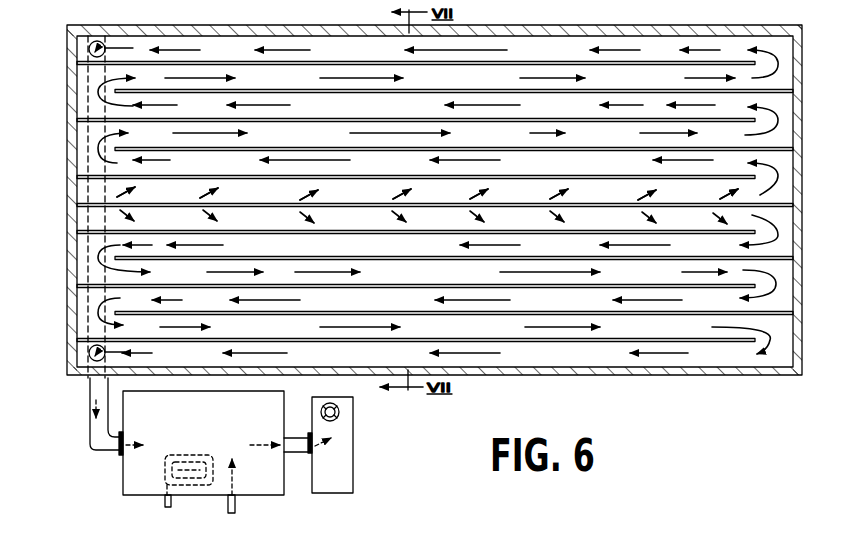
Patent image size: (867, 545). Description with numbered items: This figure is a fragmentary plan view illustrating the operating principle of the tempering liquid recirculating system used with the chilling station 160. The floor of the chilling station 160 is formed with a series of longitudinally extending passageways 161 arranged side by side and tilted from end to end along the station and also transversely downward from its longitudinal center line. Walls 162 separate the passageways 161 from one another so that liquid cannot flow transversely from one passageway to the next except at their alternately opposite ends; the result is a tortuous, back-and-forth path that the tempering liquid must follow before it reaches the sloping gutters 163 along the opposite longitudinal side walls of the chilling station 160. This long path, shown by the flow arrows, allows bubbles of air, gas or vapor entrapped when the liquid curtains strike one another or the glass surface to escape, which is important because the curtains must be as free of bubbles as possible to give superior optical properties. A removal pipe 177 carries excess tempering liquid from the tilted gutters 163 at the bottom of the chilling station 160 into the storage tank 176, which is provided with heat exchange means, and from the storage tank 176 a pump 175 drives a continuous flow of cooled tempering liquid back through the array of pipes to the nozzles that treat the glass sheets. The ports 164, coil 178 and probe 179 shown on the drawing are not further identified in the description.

The chilling station 160 is at (103, 33).
The longitudinally extending passageways 161 is at (450, 80).
The walls 162 is at (98, 173).
The sloping gutters 163 is at (435, 50).
The outlet ports 164 is at (88, 48).
The pump 175 is at (350, 457).
The storage tank 176 is at (123, 477).
The removal pipe 177 is at (77, 198).
The heating coil 178 is at (197, 447).
The sensor probe 179 is at (233, 450).